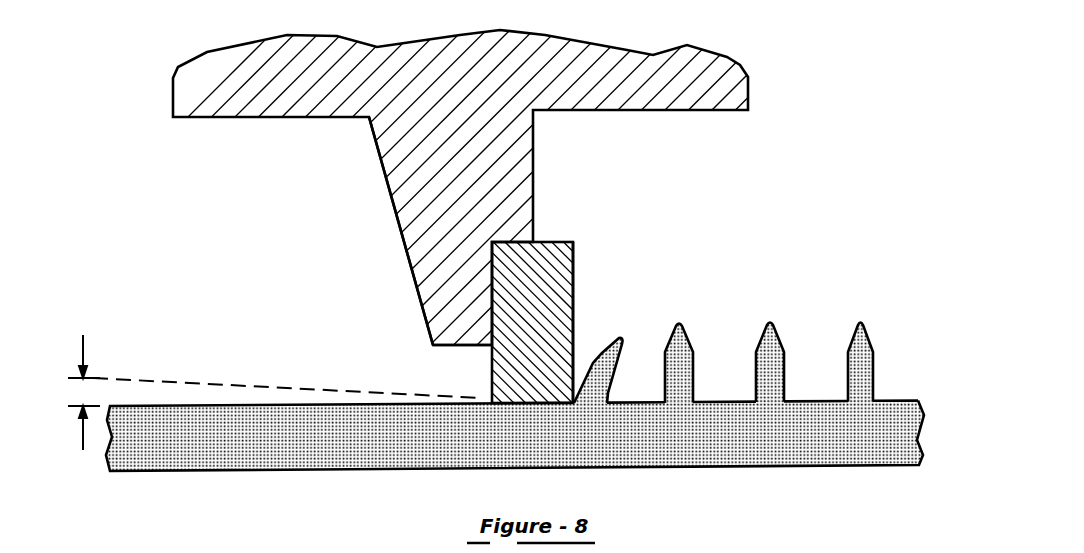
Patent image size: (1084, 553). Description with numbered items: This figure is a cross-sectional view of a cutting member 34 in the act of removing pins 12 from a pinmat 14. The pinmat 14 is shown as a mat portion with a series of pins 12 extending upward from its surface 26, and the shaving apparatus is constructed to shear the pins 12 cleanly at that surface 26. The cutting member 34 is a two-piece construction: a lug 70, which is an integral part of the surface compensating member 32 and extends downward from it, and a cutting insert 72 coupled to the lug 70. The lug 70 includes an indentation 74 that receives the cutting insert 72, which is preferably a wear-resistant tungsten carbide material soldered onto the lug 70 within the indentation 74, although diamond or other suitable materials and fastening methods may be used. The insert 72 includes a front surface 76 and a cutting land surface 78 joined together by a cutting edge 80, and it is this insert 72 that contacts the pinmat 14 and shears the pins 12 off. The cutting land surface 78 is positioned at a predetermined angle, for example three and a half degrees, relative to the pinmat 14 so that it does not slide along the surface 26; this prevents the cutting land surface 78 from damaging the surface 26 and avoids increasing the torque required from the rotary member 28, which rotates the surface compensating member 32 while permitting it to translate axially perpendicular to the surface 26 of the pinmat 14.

The pins 12 is at (620, 340).
The pinmat 14 is at (898, 388).
The surface of the pinmat 26 is at (242, 406).
The rotary member 28 is at (867, 466).
The surface compensating member 32 is at (762, 90).
The cutting member 34 is at (383, 214).
The lug 70 is at (433, 346).
The cutting insert 72 is at (575, 242).
The indentation 74 is at (492, 300).
The front surface 76 is at (574, 305).
The cutting land surface 78 is at (500, 403).
The cutting edge 80 is at (574, 403).